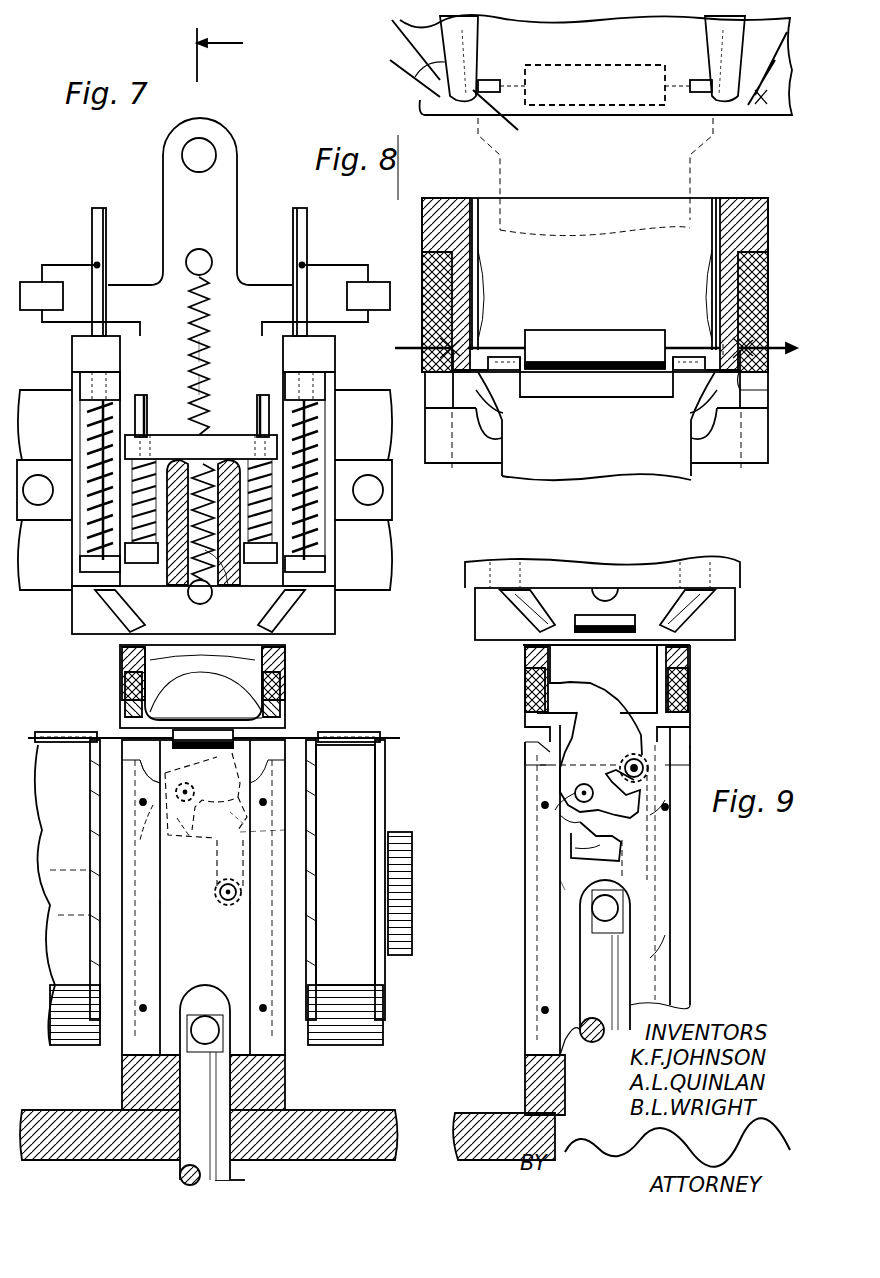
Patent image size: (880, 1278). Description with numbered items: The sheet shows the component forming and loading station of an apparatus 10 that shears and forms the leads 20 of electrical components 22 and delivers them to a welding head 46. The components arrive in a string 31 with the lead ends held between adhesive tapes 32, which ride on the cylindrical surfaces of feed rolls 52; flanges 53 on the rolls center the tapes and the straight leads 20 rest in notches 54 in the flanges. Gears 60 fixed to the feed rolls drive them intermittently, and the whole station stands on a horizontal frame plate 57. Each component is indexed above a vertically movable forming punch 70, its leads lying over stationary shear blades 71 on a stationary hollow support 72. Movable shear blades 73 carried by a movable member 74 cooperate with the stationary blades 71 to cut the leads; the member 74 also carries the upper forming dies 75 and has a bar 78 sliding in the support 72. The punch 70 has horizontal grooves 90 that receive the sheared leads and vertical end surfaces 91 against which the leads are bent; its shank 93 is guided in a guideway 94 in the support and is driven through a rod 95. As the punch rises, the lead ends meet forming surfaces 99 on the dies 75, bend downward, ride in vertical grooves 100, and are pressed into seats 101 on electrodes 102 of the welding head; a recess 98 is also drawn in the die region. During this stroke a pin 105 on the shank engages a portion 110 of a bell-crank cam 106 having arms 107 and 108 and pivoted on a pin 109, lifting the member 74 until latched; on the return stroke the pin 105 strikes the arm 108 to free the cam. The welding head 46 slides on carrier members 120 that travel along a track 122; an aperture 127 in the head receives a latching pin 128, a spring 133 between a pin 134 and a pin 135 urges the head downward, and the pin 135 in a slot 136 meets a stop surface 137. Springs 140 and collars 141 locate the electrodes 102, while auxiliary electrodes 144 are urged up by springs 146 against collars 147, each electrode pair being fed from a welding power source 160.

In FIG. 7, the section line / machine 10 is at (234, 610).
In FIG. 7, the leads 20 is at (100, 736).
In FIG. 8, the leads 20 is at (538, 330).
In FIG. 7, the electrical component 22 is at (218, 730).
In FIG. 8, the electrical component 22 is at (606, 64).
In FIG. 9, the electrical component 22 is at (610, 618).
In FIG. 7, the string 31 is at (35, 734).
In FIG. 7, the adhesive tapes 32 is at (370, 752).
In FIG. 7, the welding head 46 is at (165, 258).
In FIG. 9, the welding head 46 is at (585, 576).
In FIG. 7, the feed rolls 52 is at (80, 1042).
In FIG. 7, the flanges 53 is at (350, 736).
In FIG. 7, the notches 54 is at (88, 935).
In FIG. 7, the horizontal frame plate 57 is at (368, 1128).
In FIG. 9, the horizontal frame plate 57 is at (500, 1125).
In FIG. 7, the gears 60 is at (412, 842).
In FIG. 7, the forming punch 70 is at (128, 790).
In FIG. 8, the forming punch 70 is at (610, 240).
In FIG. 9, the forming punch 70 is at (622, 668).
In FIG. 7, the stationary shear blades 71 is at (130, 760).
In FIG. 8, the stationary shear blades 71 is at (492, 396).
In FIG. 9, the stationary shear blades 71 is at (532, 756).
In FIG. 7, the stationary hollow support 72 is at (275, 892).
In FIG. 9, the stationary hollow support 72 is at (676, 858).
In FIG. 7, the movable shear blades 73 is at (130, 690).
In FIG. 8, the movable shear blades 73 is at (430, 285).
In FIG. 9, the movable shear blades 73 is at (525, 688).
In FIG. 7, the movable member 74 is at (128, 664).
In FIG. 8, the movable member 74 is at (745, 228).
In FIG. 9, the movable member 74 is at (528, 656).
In FIG. 7, the upper forming dies 75 is at (272, 666).
In FIG. 8, the upper forming dies 75 is at (735, 282).
In FIG. 9, the upper forming dies 75 is at (528, 685).
In FIG. 9, the bar 78 is at (560, 730).
In FIG. 8, the horizontal grooves 90 is at (525, 348).
In FIG. 8, the vertical end surfaces 91 is at (744, 392).
In FIG. 7, the shank 93 is at (230, 946).
In FIG. 9, the shank 93 is at (576, 886).
In FIG. 7, the guideway 94 is at (245, 960).
In FIG. 9, the guideway 94 is at (666, 932).
In FIG. 7, the rod 95 is at (207, 1094).
In FIG. 9, the rod 95 is at (640, 966).
In FIG. 7, the recess 98 is at (205, 710).
In FIG. 8, the recess 98 is at (522, 386).
In FIG. 7, the forming surfaces 99 is at (160, 702).
In FIG. 8, the forming surfaces 99 is at (486, 316).
In FIG. 8, the vertical grooves 100 is at (478, 258).
In FIG. 7, the seats 101 is at (242, 655).
In FIG. 8, the seats 101 is at (473, 84).
In FIG. 7, the electrodes 102 is at (143, 410).
In FIG. 8, the electrodes 102 is at (445, 62).
In FIG. 9, the electrodes 102 is at (520, 600).
In FIG. 7, the pin 105 is at (222, 898).
In FIG. 9, the pin 105 is at (648, 768).
In FIG. 7, the cam 106 is at (200, 838).
In FIG. 9, the cam 106 is at (578, 792).
In FIG. 7, the arm 107 is at (300, 796).
In FIG. 9, the arm 107 is at (555, 792).
In FIG. 7, the arm 108 is at (246, 826).
In FIG. 9, the arm 108 is at (576, 850).
In FIG. 7, the pin 109 is at (170, 815).
In FIG. 9, the pin 109 is at (562, 820).
In FIG. 7, the portion 110 is at (300, 833).
In FIG. 9, the portion 110 is at (668, 802).
In FIG. 7, the carrier members 120 is at (72, 350).
In FIG. 8, the carrier members 120 is at (420, 96).
In FIG. 9, the carrier members 120 is at (726, 640).
In FIG. 7, the track 122 is at (352, 424).
In FIG. 7, the aperture 127 is at (205, 390).
In FIG. 7, the latching pin 128 is at (205, 356).
In FIG. 7, the spring 133 is at (205, 296).
In FIG. 7, the pin 134 is at (203, 256).
In FIG. 7, the pin 135 is at (190, 594).
In FIG. 7, the slot 136 is at (208, 542).
In FIG. 7, the stop surface 137 is at (205, 514).
In FIG. 7, the springs 140 is at (201, 486).
In FIG. 7, the collars 141 is at (240, 580).
In FIG. 7, the auxiliary electrodes 144 is at (92, 228).
In FIG. 8, the auxiliary electrodes 144 is at (435, 50).
In FIG. 9, the auxiliary electrodes 144 is at (502, 618).
In FIG. 7, the springs 146 is at (85, 440).
In FIG. 7, the collars 147 is at (95, 390).
In FIG. 7, the sources of welding power 160 is at (30, 292).